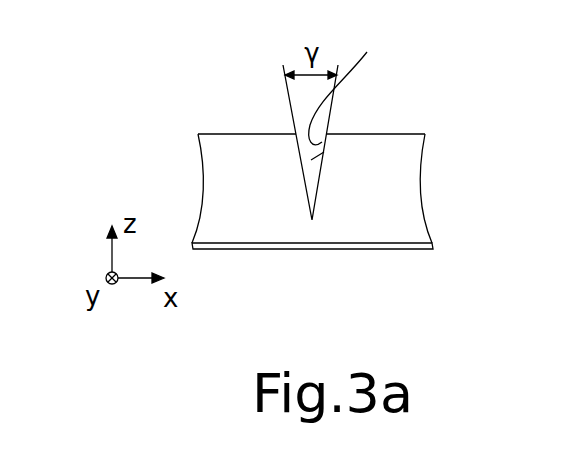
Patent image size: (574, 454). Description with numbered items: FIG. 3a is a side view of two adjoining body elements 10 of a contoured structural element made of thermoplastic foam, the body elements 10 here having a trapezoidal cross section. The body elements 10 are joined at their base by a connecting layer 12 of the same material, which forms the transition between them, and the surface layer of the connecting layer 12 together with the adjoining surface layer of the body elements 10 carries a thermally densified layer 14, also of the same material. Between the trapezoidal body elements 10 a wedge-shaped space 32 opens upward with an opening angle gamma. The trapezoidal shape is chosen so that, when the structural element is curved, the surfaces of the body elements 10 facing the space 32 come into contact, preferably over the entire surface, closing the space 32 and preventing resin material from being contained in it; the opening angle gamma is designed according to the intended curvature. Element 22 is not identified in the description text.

The body element 10 is at (372, 163).
The connecting layer 12 is at (312, 229).
The thermally densified layer 14 is at (377, 250).
The light beam 22 is at (359, 82).
The space 32 is at (306, 147).